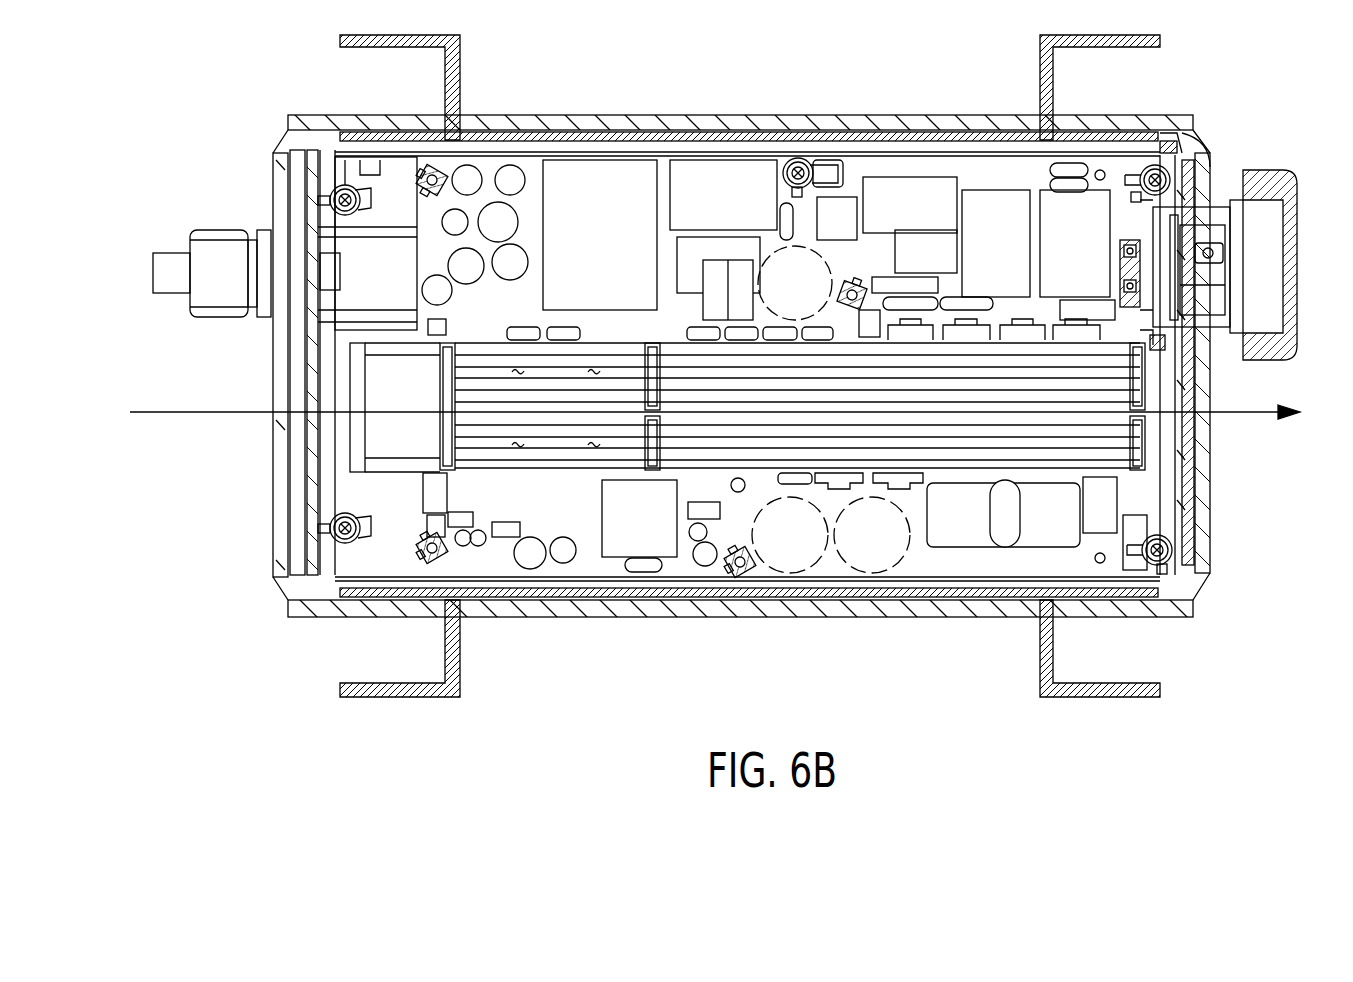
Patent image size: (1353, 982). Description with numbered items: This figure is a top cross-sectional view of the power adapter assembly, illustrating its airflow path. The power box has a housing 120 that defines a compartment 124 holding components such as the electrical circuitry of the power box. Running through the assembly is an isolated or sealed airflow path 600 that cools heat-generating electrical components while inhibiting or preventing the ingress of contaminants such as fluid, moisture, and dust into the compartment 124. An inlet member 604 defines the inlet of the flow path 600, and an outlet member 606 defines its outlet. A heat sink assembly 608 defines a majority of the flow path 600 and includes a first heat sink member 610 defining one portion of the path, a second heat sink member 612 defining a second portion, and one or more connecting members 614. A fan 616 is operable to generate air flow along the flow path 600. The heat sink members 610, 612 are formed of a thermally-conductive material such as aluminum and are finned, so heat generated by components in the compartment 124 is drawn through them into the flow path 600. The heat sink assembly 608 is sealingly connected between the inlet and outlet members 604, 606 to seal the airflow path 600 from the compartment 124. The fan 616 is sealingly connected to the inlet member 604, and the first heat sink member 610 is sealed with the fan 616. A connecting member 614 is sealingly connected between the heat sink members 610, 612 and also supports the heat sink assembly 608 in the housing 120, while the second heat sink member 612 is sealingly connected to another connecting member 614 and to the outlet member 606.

The housing 120 is at (285, 140).
The compartment 124 is at (642, 180).
The airflow path 600 is at (212, 414).
The inlet member 604 is at (332, 447).
The outlet member 606 is at (1197, 463).
The heat sink assembly 608 is at (728, 478).
The first heat sink member 610 is at (500, 345).
The second heat sink member 612 is at (866, 352).
The connecting member 614 is at (657, 345).
The fan 616 is at (350, 322).